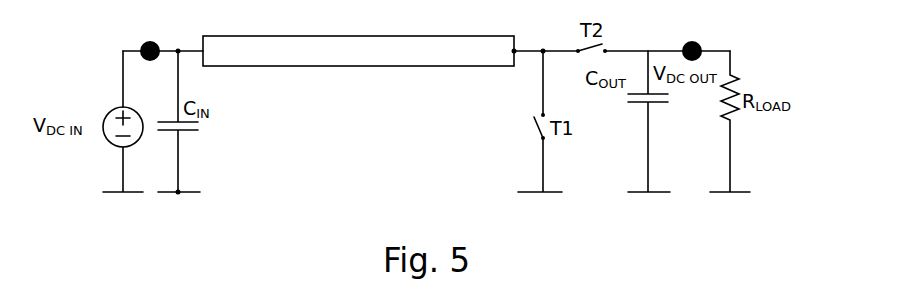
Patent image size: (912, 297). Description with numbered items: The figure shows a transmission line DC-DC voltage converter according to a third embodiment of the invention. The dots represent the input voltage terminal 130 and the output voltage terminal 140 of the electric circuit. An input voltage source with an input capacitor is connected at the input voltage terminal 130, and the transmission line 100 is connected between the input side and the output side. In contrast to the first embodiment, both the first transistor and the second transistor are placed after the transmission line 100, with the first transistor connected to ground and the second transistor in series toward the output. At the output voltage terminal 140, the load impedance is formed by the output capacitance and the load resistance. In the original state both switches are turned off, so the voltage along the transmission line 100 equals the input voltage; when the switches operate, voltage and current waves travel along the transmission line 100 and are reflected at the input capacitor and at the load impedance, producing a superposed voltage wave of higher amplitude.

The transmission line 100 is at (358, 51).
The input voltage terminal 130 is at (147, 41).
The output voltage terminal 140 is at (688, 40).